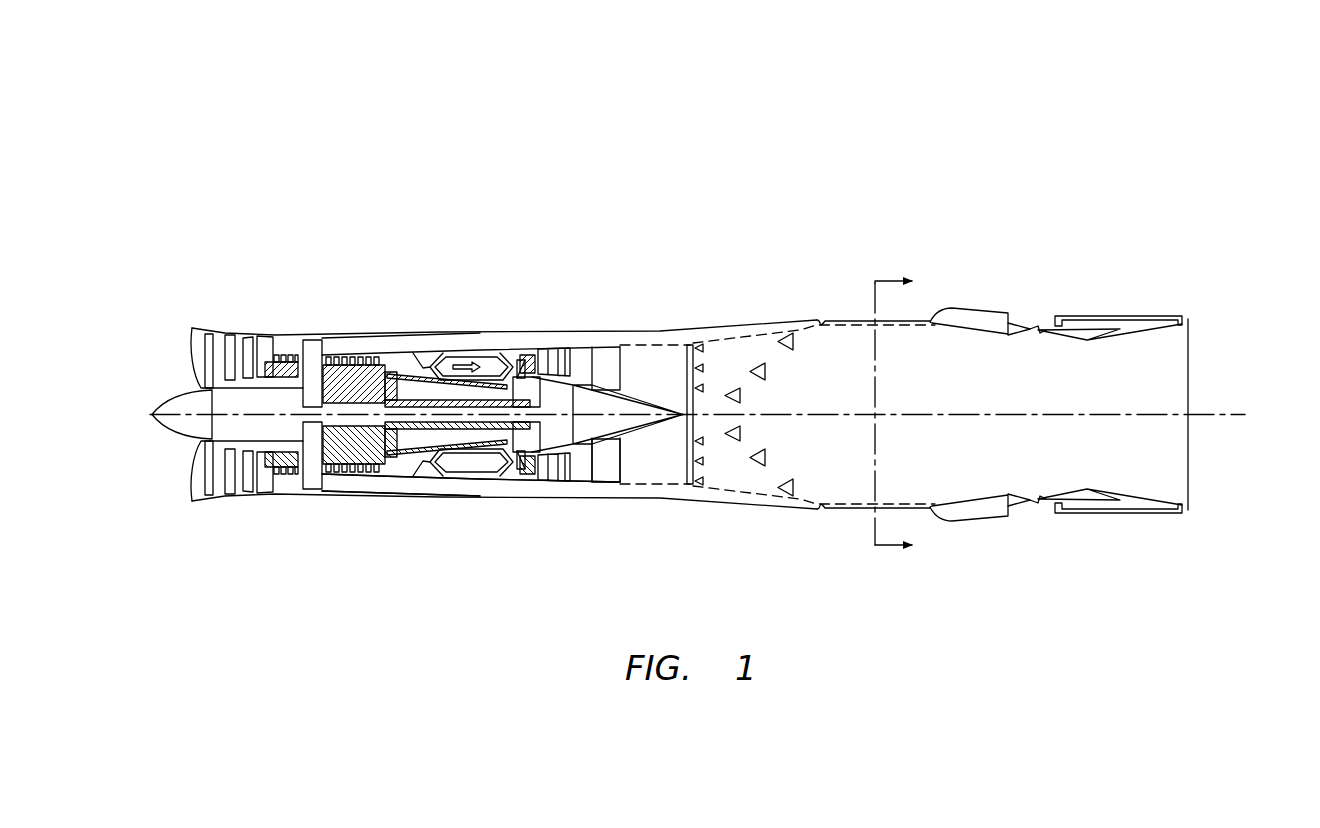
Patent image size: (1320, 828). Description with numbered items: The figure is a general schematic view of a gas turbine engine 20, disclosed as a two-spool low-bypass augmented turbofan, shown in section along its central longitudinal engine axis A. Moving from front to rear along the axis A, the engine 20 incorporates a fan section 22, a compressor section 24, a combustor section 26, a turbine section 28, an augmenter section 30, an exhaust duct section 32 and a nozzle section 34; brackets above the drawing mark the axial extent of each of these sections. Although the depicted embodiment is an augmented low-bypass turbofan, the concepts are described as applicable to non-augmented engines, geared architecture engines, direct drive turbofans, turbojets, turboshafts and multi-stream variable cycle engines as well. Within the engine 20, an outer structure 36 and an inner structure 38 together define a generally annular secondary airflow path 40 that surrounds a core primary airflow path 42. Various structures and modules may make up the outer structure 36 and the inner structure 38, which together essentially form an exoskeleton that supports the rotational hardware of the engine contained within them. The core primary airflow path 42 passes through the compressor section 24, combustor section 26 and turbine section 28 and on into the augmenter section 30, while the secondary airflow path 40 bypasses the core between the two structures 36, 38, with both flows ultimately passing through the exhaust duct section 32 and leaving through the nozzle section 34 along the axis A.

The gas turbine engine 20 is at (699, 318).
The fan section 22 is at (192, 246).
The compressor section 24 is at (310, 246).
The combustor section 26 is at (413, 246).
The turbine section 28 is at (513, 246).
The augmenter section 30 is at (583, 244).
The exhaust duct section 32 is at (938, 244).
The nozzle section 34 is at (1188, 244).
The outer structure 36 is at (583, 498).
The inner structure 38 is at (533, 482).
The secondary airflow path 40 is at (437, 488).
The core primary airflow path 42 is at (655, 458).
The central longitudinal engine axis A is at (1216, 422).